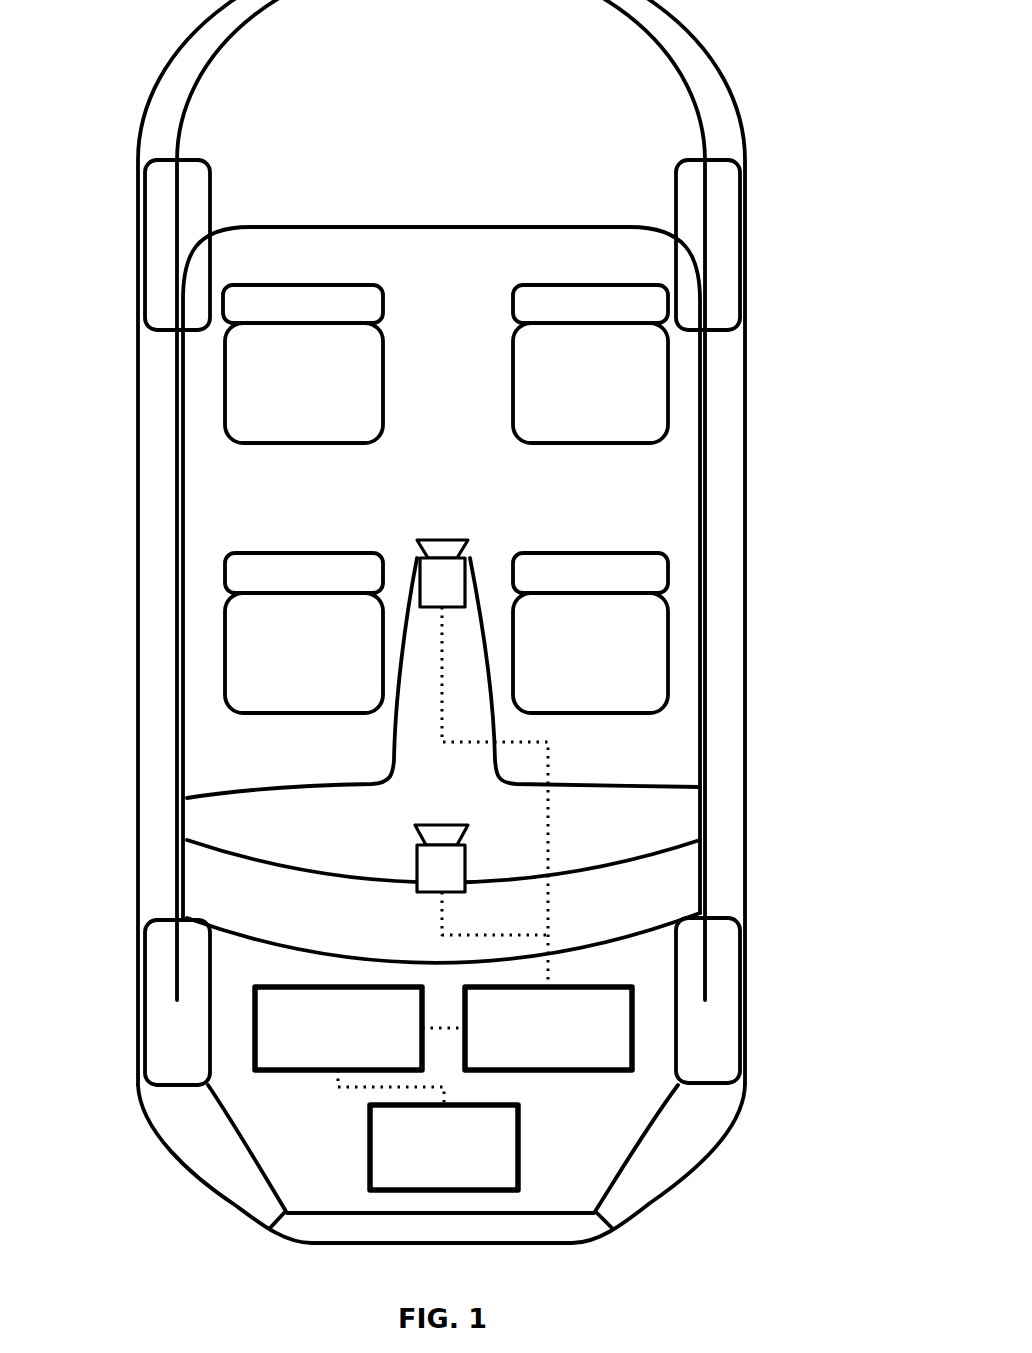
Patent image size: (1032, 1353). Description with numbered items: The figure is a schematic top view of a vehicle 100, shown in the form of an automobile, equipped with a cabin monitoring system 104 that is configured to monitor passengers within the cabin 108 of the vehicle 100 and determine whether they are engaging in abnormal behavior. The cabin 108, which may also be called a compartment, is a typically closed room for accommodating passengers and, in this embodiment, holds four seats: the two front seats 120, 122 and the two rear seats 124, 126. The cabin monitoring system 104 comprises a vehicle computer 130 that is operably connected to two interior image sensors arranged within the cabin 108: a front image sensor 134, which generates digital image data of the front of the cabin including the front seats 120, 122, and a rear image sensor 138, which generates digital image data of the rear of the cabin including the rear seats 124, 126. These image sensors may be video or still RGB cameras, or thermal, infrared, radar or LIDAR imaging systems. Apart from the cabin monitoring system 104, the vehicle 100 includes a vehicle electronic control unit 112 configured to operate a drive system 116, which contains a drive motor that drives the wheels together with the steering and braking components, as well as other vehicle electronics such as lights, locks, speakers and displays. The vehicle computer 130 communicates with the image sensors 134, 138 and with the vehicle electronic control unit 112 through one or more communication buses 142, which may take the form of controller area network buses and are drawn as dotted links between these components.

The vehicle 100 is at (824, 118).
The cabin monitoring system 104 is at (640, 810).
The cabin 108 is at (216, 481).
The vehicle electronic control unit 112 is at (280, 1072).
The drive system 116 is at (518, 1142).
The front seat 120 is at (668, 633).
The front seat 122 is at (225, 617).
The rear seat 124 is at (668, 390).
The rear seat 126 is at (225, 400).
The vehicle computer 130 is at (632, 1028).
The front image sensor 134 is at (417, 870).
The rear image sensor 138 is at (420, 558).
The communication buses 142 is at (562, 932).